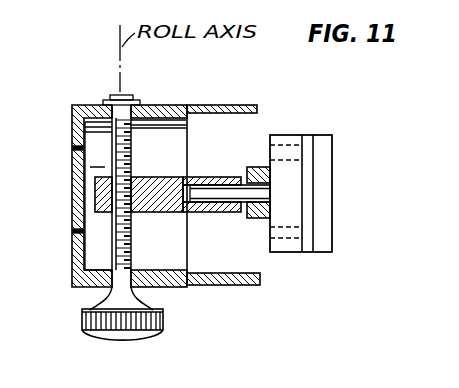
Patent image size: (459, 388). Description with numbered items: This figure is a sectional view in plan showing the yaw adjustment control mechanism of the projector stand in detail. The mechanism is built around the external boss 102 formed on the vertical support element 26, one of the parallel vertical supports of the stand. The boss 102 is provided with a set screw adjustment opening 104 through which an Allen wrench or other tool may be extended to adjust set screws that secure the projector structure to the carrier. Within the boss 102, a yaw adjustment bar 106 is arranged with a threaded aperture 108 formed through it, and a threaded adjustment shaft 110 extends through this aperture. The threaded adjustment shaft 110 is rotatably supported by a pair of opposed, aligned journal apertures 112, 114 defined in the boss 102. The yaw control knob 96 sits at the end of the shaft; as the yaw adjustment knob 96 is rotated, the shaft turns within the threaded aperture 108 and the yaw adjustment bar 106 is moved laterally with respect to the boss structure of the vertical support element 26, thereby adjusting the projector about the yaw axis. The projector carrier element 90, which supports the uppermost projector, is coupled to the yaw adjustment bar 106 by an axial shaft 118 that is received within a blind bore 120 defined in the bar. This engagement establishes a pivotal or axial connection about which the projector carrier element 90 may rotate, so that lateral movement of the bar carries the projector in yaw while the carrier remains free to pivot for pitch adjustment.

The vertical support element 26 is at (228, 103).
The projector carrier element 90 is at (333, 238).
The yaw control knob 96 is at (97, 328).
The external boss 102 is at (72, 275).
The set screw adjustment opening 104 is at (73, 232).
The yaw adjustment bar 106 is at (155, 178).
The threaded aperture 108 is at (124, 213).
The threaded adjustment shaft 110 is at (72, 135).
The journal aperture 112 is at (133, 290).
The journal aperture 114 is at (138, 112).
The axial shaft 118 is at (225, 193).
The blind bore 120 is at (207, 187).